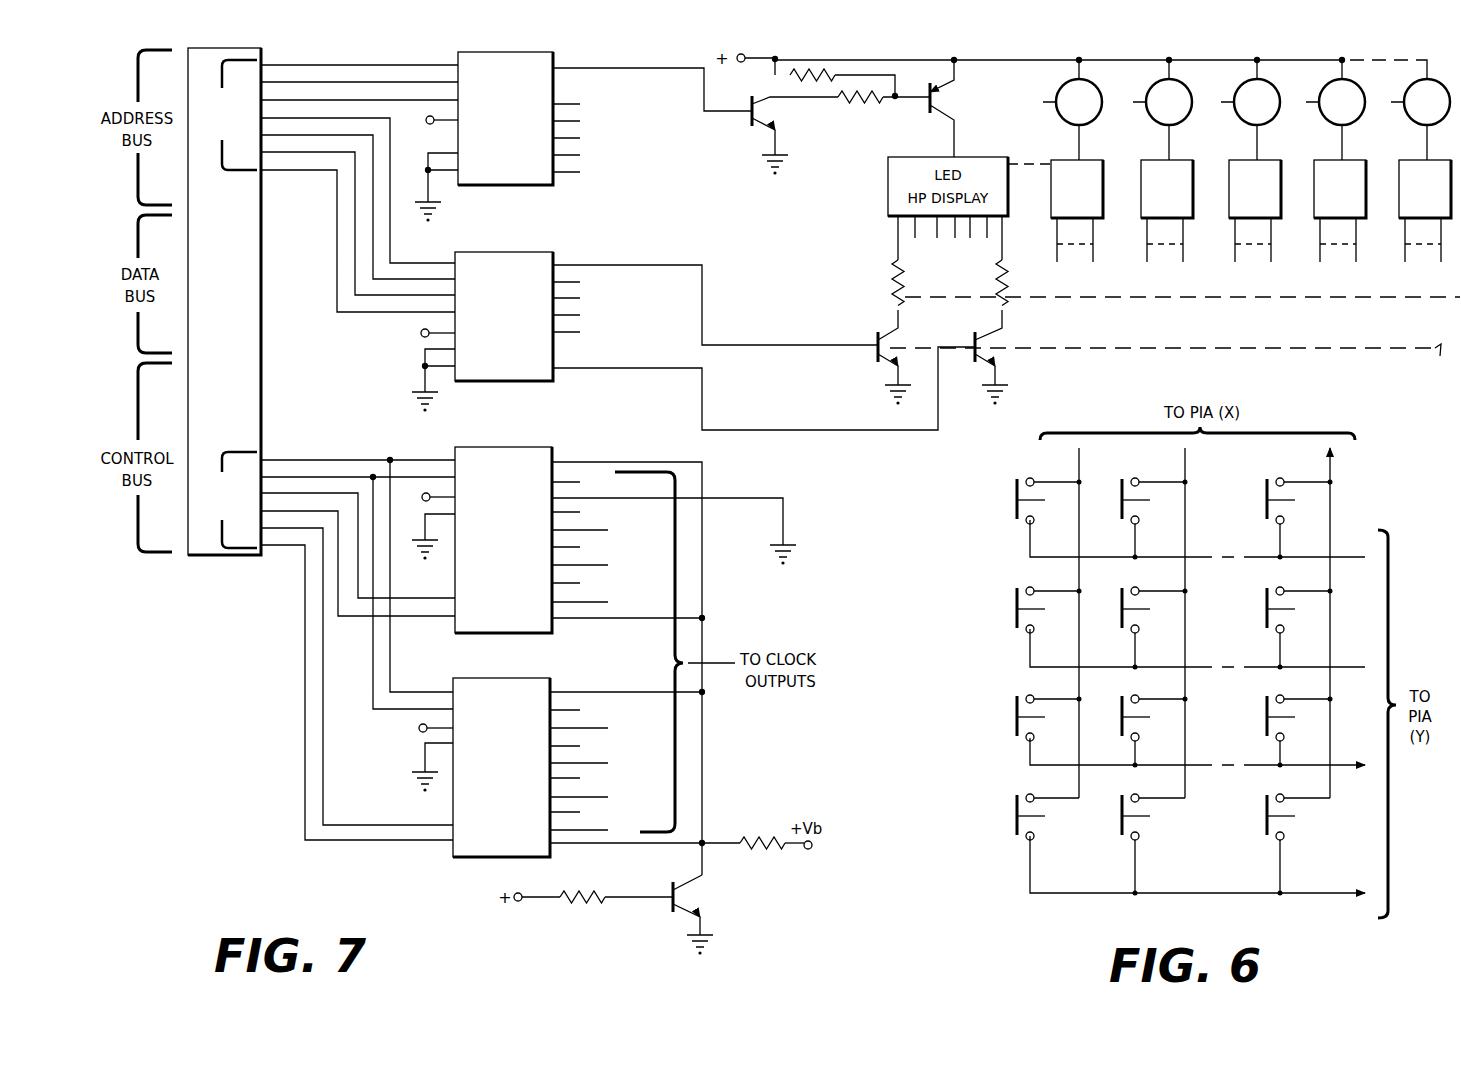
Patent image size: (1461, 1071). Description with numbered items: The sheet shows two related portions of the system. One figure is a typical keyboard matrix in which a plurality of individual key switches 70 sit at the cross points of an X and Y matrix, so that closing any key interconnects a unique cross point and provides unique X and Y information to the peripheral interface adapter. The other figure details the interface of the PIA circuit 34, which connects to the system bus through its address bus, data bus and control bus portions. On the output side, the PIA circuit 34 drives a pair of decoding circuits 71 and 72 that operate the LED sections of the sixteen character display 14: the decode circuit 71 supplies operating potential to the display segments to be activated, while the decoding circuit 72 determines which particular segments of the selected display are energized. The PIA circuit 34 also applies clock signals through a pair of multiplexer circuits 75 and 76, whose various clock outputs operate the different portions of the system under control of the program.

In FIG. 7, the sixteen character display 14 is at (1218, 340).
In FIG. 7, the PIA circuit 34 is at (215, 557).
In FIG. 6, the key switches 70 is at (1122, 505).
In FIG. 7, the decode circuit 71 is at (536, 187).
In FIG. 7, the decoding circuit 72 is at (520, 252).
In FIG. 7, the multiplexer circuit 75 is at (532, 447).
In FIG. 7, the multiplexer circuit 76 is at (520, 678).